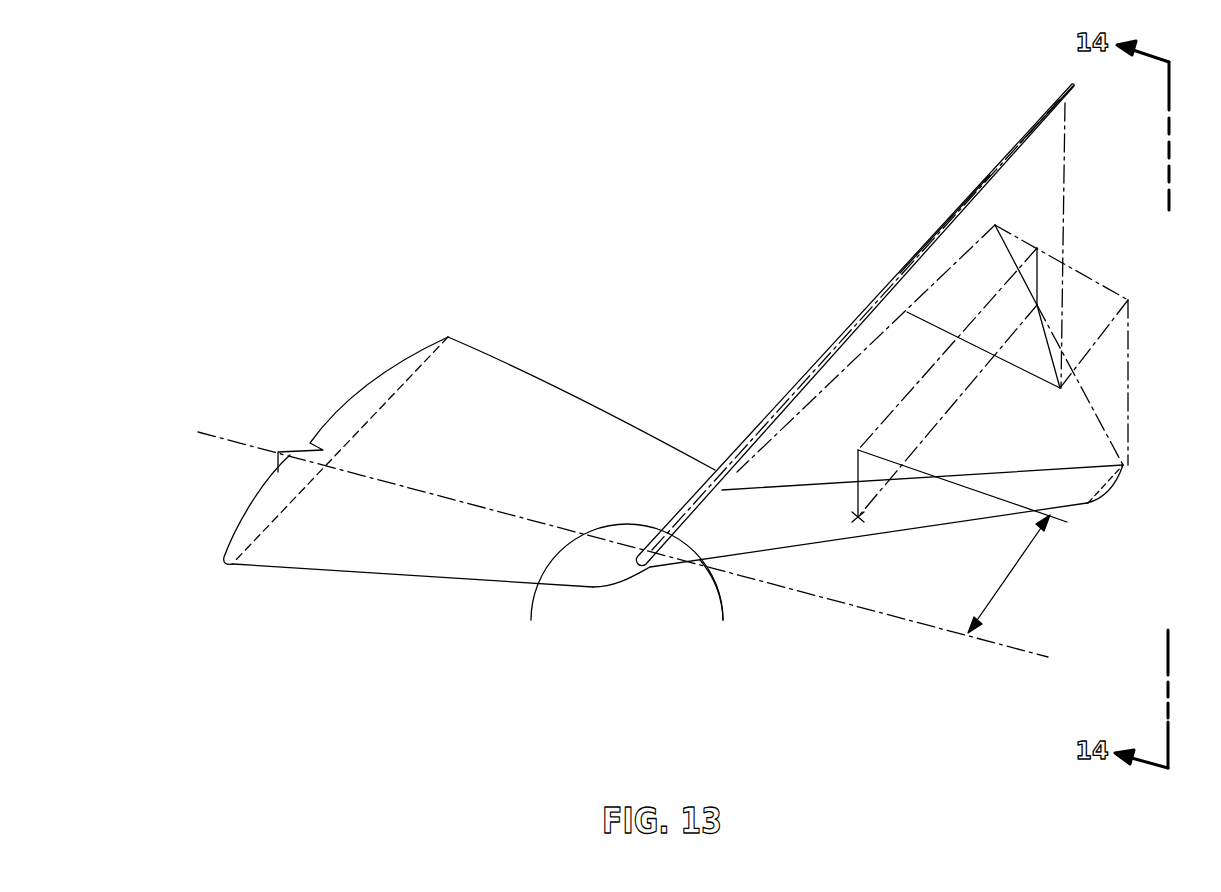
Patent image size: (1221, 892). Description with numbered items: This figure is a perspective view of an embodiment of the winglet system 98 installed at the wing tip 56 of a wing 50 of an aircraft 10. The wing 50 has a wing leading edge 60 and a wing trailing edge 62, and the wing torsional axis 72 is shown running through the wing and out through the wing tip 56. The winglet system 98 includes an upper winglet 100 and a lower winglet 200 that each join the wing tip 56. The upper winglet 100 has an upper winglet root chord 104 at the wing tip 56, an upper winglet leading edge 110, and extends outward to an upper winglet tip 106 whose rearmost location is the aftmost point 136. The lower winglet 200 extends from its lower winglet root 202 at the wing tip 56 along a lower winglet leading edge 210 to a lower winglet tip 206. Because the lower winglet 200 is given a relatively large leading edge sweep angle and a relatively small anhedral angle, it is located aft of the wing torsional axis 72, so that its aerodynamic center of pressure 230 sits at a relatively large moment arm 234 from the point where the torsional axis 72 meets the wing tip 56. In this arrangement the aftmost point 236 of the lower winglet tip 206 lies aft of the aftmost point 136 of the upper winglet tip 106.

The aircraft 10 is at (448, 336).
The wing 50 is at (352, 403).
The wing tip 56 is at (625, 583).
The wing leading edge 60 is at (368, 575).
The wing trailing edge 62 is at (511, 368).
The wing torsional axis 72 is at (947, 635).
The winglet system 98 is at (980, 178).
The upper winglet 100 is at (863, 307).
The upper winglet root chord 104 is at (614, 589).
The upper winglet tip 106 is at (1040, 108).
The upper winglet leading edge 110 is at (780, 387).
The aftmost point of the upper winglet tip 136 is at (1073, 85).
The lower winglet 200 is at (812, 550).
The lower winglet root 202 is at (727, 607).
The lower winglet tip 206 is at (1110, 487).
The lower winglet leading edge 210 is at (937, 530).
The aerodynamic center of pressure 230 is at (858, 517).
The moment arm 234 is at (1015, 572).
The aftmost point of the lower winglet tip 236 is at (1123, 465).